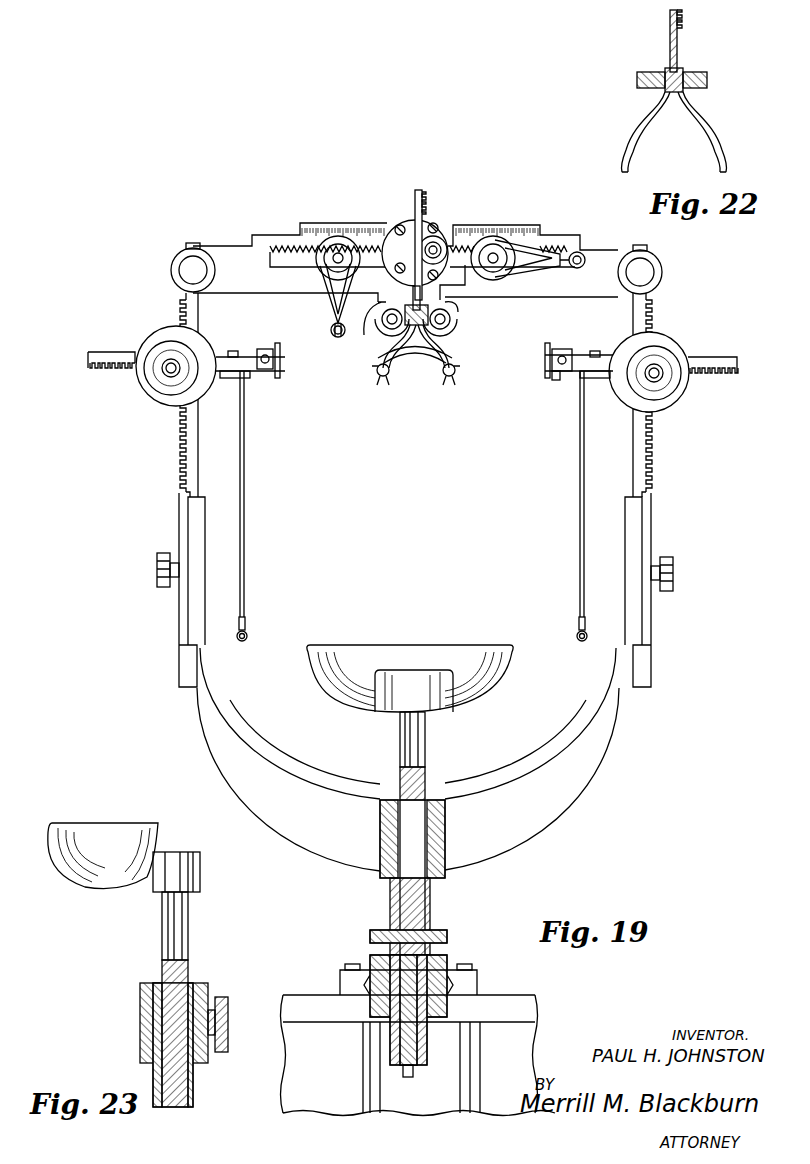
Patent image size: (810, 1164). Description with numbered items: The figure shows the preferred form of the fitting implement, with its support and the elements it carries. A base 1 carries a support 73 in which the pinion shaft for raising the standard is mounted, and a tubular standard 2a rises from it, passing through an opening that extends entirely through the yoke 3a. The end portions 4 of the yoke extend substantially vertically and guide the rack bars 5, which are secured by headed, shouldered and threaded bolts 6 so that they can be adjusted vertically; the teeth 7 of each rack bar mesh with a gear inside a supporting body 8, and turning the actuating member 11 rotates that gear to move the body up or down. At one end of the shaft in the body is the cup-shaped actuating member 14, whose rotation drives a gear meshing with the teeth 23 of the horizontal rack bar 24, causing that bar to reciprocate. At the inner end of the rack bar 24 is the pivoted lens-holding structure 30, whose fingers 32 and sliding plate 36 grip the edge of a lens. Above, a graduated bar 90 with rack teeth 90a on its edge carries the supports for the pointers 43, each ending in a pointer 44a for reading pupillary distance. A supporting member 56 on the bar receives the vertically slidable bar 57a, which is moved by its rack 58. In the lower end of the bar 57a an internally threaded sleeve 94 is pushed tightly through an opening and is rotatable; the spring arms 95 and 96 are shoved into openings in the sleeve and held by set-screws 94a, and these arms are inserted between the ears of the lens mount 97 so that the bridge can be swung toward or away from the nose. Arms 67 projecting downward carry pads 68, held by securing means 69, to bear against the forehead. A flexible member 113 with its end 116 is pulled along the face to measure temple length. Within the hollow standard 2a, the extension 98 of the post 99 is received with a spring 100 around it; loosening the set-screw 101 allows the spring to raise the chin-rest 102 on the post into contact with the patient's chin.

In FIG. 19, the base 1 is at (306, 1005).
In FIG. 19, the tubular standard 2a is at (391, 898).
In FIG. 23, the tubular standard 2a is at (195, 1086).
In FIG. 19, the yoke 3a is at (556, 800).
In FIG. 23, the yoke 3a is at (140, 1016).
In FIG. 19, the end portions of the yoke 4 is at (200, 606).
In FIG. 19, the rack bar 5 is at (199, 456).
In FIG. 19, the bolt 6 is at (156, 570).
In FIG. 19, the teeth of the rack bar 7 is at (180, 470).
In FIG. 19, the supporting body 8 is at (172, 340).
In FIG. 19, the actuating member 11 is at (150, 382).
In FIG. 19, the actuating member for the shaft 14 is at (170, 382).
In FIG. 19, the teeth of the rack bar 23 is at (695, 370).
In FIG. 19, the rack bar 24 is at (450, 195).
In FIG. 19, the lens-holding structure 30 is at (563, 350).
In FIG. 19, the fingers 32 is at (546, 361).
In FIG. 19, the plate 36 is at (554, 375).
In FIG. 19, the pointer 43 is at (330, 300).
In FIG. 19, the pointer 44a is at (336, 340).
In FIG. 19, the supporting member 56 is at (402, 226).
In FIG. 19, the bar 57a is at (413, 298).
In FIG. 22, the bar 57a is at (678, 40).
In FIG. 19, the rack 58 is at (424, 200).
In FIG. 19, the arm 67 is at (383, 330).
In FIG. 19, the pad 68 is at (452, 306).
In FIG. 19, the securing means 69 is at (452, 322).
In FIG. 19, the support 73 is at (450, 960).
In FIG. 19, the graduated bar 90 is at (340, 235).
In FIG. 19, the rack teeth 90a is at (290, 247).
In FIG. 22, the internally threaded sleeve 94 is at (683, 72).
In FIG. 22, the set-screw 94a is at (637, 80).
In FIG. 19, the spring arm 95 is at (388, 352).
In FIG. 22, the spring arm 95 is at (640, 141).
In FIG. 19, the spring arm 96 is at (444, 338).
In FIG. 22, the spring arm 96 is at (716, 156).
In FIG. 19, the lens mount 97 is at (418, 372).
In FIG. 19, the extension of the post 98 is at (408, 1076).
In FIG. 19, the post 99 is at (426, 756).
In FIG. 23, the post 99 is at (164, 922).
In FIG. 19, the spring 100 is at (428, 1045).
In FIG. 23, the set-screw 101 is at (227, 1020).
In FIG. 19, the chin-rest 102 is at (418, 655).
In FIG. 23, the chin-rest 102 is at (102, 830).
In FIG. 19, the flexible member 113 is at (246, 510).
In FIG. 19, the end of the flexible member 116 is at (249, 636).